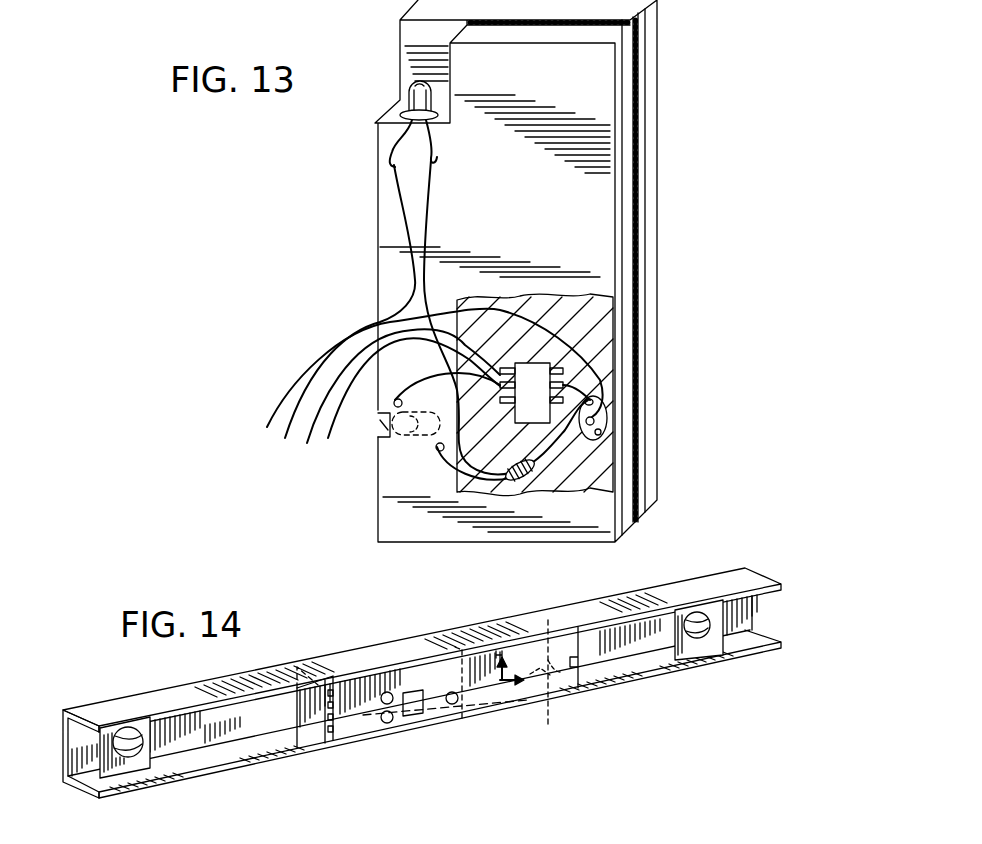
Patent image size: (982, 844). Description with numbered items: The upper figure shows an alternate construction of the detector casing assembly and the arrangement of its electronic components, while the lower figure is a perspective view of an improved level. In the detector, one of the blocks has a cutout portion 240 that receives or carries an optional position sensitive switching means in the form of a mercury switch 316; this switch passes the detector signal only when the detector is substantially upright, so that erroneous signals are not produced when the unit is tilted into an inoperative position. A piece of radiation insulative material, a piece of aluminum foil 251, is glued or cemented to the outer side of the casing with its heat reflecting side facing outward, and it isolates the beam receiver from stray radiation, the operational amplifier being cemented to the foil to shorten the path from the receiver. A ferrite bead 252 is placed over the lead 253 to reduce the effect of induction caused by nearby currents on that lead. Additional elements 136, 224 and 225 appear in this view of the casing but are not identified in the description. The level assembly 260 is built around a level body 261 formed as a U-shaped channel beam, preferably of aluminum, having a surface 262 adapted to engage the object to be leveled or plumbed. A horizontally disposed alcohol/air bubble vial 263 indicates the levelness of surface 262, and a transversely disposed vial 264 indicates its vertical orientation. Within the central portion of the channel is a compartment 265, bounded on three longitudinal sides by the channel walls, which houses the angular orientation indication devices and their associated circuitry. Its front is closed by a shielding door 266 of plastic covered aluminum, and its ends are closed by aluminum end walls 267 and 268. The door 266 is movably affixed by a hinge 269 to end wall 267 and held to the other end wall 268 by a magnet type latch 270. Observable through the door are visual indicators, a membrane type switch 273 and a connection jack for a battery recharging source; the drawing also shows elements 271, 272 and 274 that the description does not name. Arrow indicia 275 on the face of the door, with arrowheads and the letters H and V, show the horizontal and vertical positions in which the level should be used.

In FIG. 13, the cutout portion 240 is at (418, 60).
In FIG. 13, the mercury switch 316 is at (407, 133).
In FIG. 13, the aluminum foil 251 is at (603, 325).
In FIG. 13, the ferrite bead 252 is at (592, 401).
In FIG. 13, the socket 225 is at (603, 423).
In FIG. 13, the cable clamp 224 is at (382, 432).
In FIG. 13, the cable hole 136 is at (442, 466).
In FIG. 13, the lead 253 is at (566, 416).
In FIG. 14, the level assembly 260 is at (422, 702).
In FIG. 14, the level body 261 is at (177, 693).
In FIG. 14, the surface 262 is at (88, 797).
In FIG. 14, the vial 263 is at (113, 745).
In FIG. 14, the transversely disposed vial 264 is at (710, 627).
In FIG. 14, the compartment 265 is at (465, 647).
In FIG. 14, the door 266 is at (454, 704).
In FIG. 14, the end wall 267 is at (310, 723).
In FIG. 14, the end wall 268 is at (550, 712).
In FIG. 14, the hinge 269 is at (333, 728).
In FIG. 14, the magnet type latch 270 is at (597, 682).
In FIG. 14, the indicator lamp 271 is at (390, 705).
In FIG. 14, the indicator lamp 272 is at (384, 724).
In FIG. 14, the membrane type switch 273 is at (421, 714).
In FIG. 14, the wiring 274 is at (470, 721).
In FIG. 14, the arrow indicia 275 is at (508, 683).